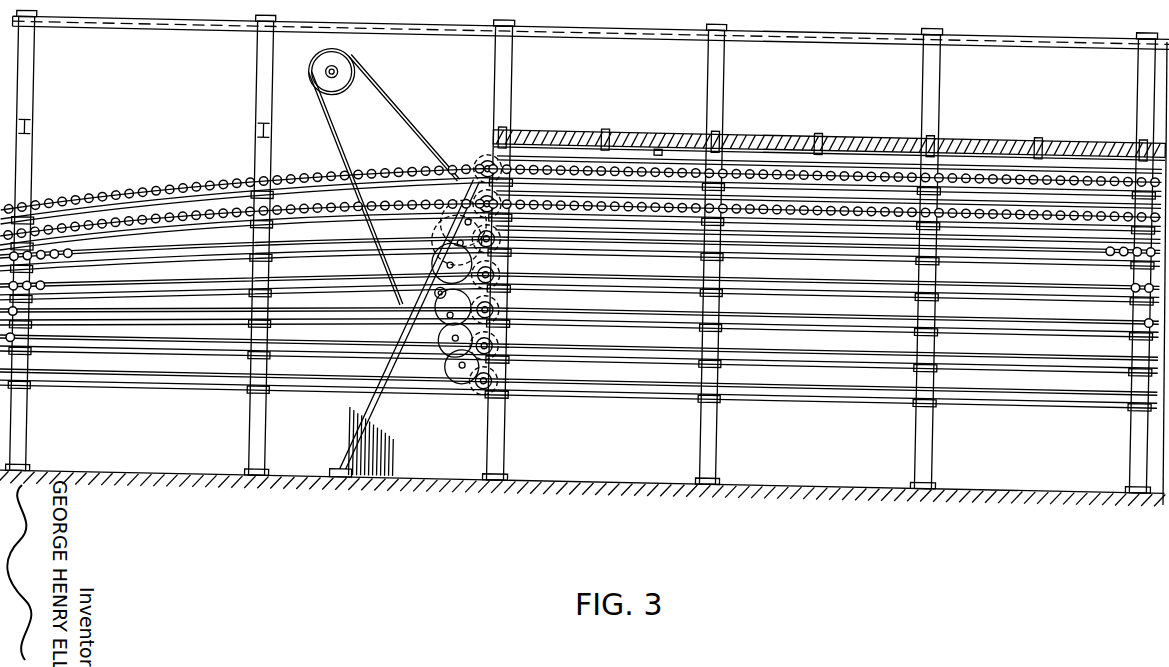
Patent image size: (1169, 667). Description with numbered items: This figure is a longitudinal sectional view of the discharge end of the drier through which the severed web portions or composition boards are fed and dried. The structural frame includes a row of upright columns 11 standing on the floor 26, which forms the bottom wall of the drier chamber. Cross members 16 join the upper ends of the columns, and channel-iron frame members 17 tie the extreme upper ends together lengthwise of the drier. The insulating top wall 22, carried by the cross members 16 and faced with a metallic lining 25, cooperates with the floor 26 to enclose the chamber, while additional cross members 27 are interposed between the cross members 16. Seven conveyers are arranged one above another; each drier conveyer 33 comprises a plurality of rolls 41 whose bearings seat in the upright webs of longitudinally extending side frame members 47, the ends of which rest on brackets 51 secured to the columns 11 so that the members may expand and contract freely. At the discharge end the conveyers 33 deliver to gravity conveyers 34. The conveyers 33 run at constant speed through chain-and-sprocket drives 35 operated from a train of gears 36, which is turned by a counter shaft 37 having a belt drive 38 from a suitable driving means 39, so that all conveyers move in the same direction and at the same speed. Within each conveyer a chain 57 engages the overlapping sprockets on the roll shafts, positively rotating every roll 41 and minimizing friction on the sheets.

The upright columns 11 is at (24, 82).
The cross members 16 is at (30, 122).
The frame members 17 is at (114, 25).
The top wall 22 is at (866, 116).
The metallic lining 25 is at (656, 136).
The bottom wall or floor 26 is at (823, 472).
The cross members 27 is at (608, 121).
The drier conveyers 33 is at (772, 158).
The gravity conveyers 34 is at (154, 217).
The chain-and-sprocket drives 35 is at (496, 363).
The train of gears 36 is at (449, 351).
The counter shaft 37 is at (431, 284).
The belt drive 38 is at (377, 92).
The driving means 39 is at (340, 63).
The rolls 41 is at (617, 198).
The side frame members 47 is at (612, 271).
The brackets 51 is at (267, 192).
The chain 57 is at (571, 186).